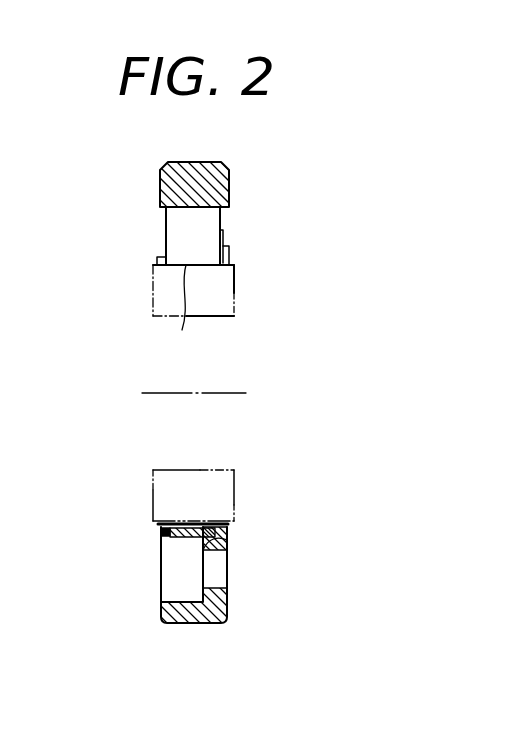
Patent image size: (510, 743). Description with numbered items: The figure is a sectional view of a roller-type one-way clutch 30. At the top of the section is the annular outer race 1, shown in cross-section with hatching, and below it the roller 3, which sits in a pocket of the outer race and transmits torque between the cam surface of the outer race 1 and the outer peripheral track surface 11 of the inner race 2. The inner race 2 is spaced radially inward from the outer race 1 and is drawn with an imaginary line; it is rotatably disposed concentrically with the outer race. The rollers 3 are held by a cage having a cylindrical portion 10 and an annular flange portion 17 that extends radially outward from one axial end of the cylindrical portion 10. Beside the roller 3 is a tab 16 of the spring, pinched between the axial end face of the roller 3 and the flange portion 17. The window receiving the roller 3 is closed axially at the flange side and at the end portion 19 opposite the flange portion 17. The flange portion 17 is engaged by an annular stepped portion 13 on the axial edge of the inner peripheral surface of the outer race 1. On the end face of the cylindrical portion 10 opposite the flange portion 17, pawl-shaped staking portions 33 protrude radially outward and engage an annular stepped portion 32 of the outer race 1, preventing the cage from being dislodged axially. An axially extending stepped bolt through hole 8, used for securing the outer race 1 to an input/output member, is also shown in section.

The outer race 1 is at (170, 178).
The inner race 2 is at (232, 296).
The roller 3 is at (170, 220).
The bolt through hole 8 is at (218, 582).
The cylindrical portion 10 is at (187, 521).
The outer peripheral track surface 11 is at (184, 311).
The annular stepped portion 13 is at (205, 546).
The tab 16 is at (224, 232).
The flange portion 17 is at (230, 252).
The end portion 19 is at (160, 259).
The one-way clutch 30 is at (254, 158).
The annular stepped portion 32 is at (162, 537).
The staking portion 33 is at (157, 524).